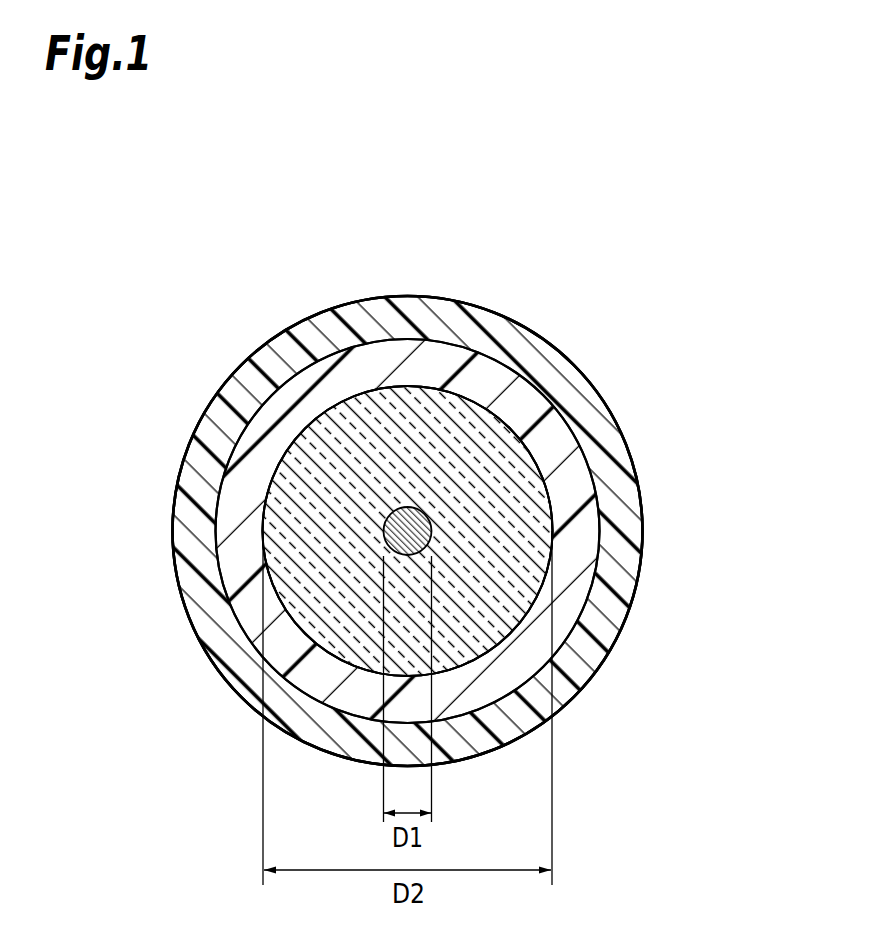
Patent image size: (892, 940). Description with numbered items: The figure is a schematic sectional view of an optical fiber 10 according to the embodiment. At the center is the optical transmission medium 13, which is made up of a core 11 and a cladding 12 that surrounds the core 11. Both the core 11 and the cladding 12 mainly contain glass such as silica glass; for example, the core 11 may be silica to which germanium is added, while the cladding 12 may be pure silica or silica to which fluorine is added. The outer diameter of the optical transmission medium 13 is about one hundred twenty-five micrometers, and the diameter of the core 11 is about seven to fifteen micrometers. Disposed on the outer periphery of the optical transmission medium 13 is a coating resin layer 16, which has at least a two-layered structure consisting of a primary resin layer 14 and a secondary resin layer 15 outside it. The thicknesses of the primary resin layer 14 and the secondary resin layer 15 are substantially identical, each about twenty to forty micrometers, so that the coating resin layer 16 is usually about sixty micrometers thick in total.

The optical fiber 10 is at (203, 238).
The core 11 is at (424, 523).
The cladding 12 is at (521, 504).
The optical transmission medium 13 is at (610, 280).
The primary resin layer 14 is at (588, 550).
The secondary resin layer 15 is at (622, 608).
The coating resin layer 16 is at (728, 546).